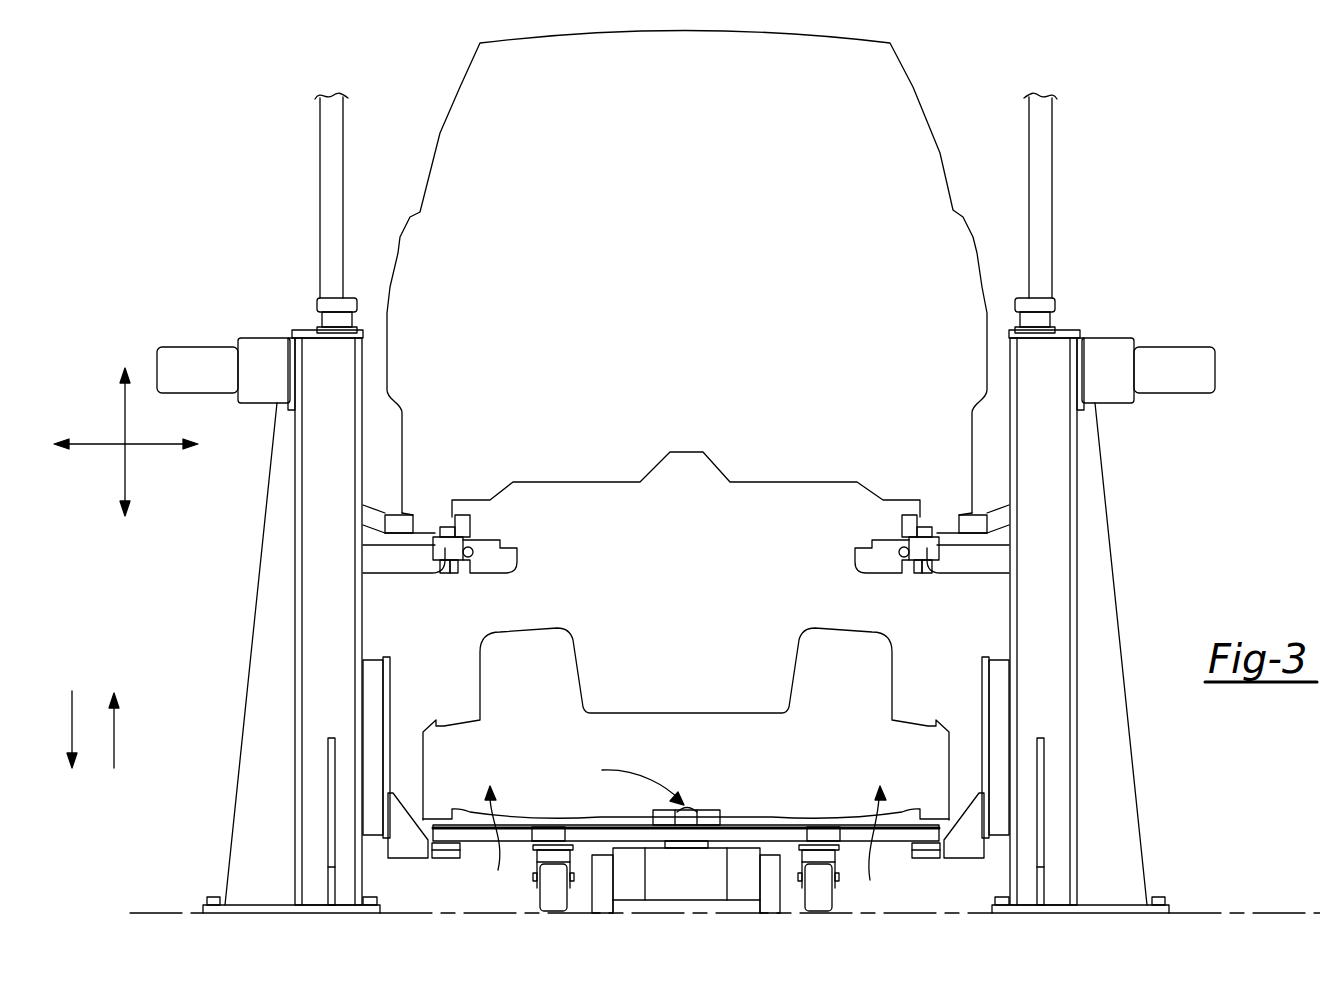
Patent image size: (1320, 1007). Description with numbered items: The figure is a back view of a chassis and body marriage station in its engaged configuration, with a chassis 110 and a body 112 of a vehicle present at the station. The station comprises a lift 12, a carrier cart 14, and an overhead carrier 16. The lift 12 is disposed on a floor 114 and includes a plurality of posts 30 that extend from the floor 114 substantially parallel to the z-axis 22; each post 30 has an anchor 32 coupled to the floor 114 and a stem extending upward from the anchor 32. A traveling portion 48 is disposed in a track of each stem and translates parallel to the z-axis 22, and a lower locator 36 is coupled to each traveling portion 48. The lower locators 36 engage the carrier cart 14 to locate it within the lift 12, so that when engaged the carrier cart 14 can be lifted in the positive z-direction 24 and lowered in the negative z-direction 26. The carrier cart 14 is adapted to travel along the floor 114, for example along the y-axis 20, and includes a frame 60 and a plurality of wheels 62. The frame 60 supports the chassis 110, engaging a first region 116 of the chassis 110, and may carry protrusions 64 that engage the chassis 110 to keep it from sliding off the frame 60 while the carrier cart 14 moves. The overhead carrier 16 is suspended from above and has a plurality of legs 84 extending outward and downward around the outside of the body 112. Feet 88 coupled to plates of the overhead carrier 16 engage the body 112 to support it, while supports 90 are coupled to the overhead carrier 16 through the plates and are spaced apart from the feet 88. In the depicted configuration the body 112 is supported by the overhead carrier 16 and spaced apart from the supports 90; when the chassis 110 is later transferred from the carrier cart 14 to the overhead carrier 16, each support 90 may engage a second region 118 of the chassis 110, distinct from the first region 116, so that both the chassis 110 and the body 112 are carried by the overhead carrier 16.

The lift 12 is at (1100, 680).
The carrier cart 14 is at (892, 850).
The overhead carrier 16 is at (1050, 88).
The y-axis 20 is at (97, 446).
The z-axis 22 is at (118, 400).
The positive z-direction 24 is at (114, 690).
The negative z-direction 26 is at (72, 683).
The post 30 is at (325, 550).
The anchor 32 is at (262, 907).
The lower locator 36 is at (436, 857).
The traveling portion 48 is at (380, 693).
The frame 60 is at (470, 836).
The wheel 62 is at (550, 907).
The protrusion 64 is at (690, 817).
The leg 84 is at (328, 176).
The foot 88 is at (408, 553).
The support 90 is at (495, 563).
The chassis 110 is at (555, 703).
The body 112 is at (880, 102).
The floor 114 is at (1280, 913).
The first region 116 is at (625, 781).
The second region 118 is at (691, 848).